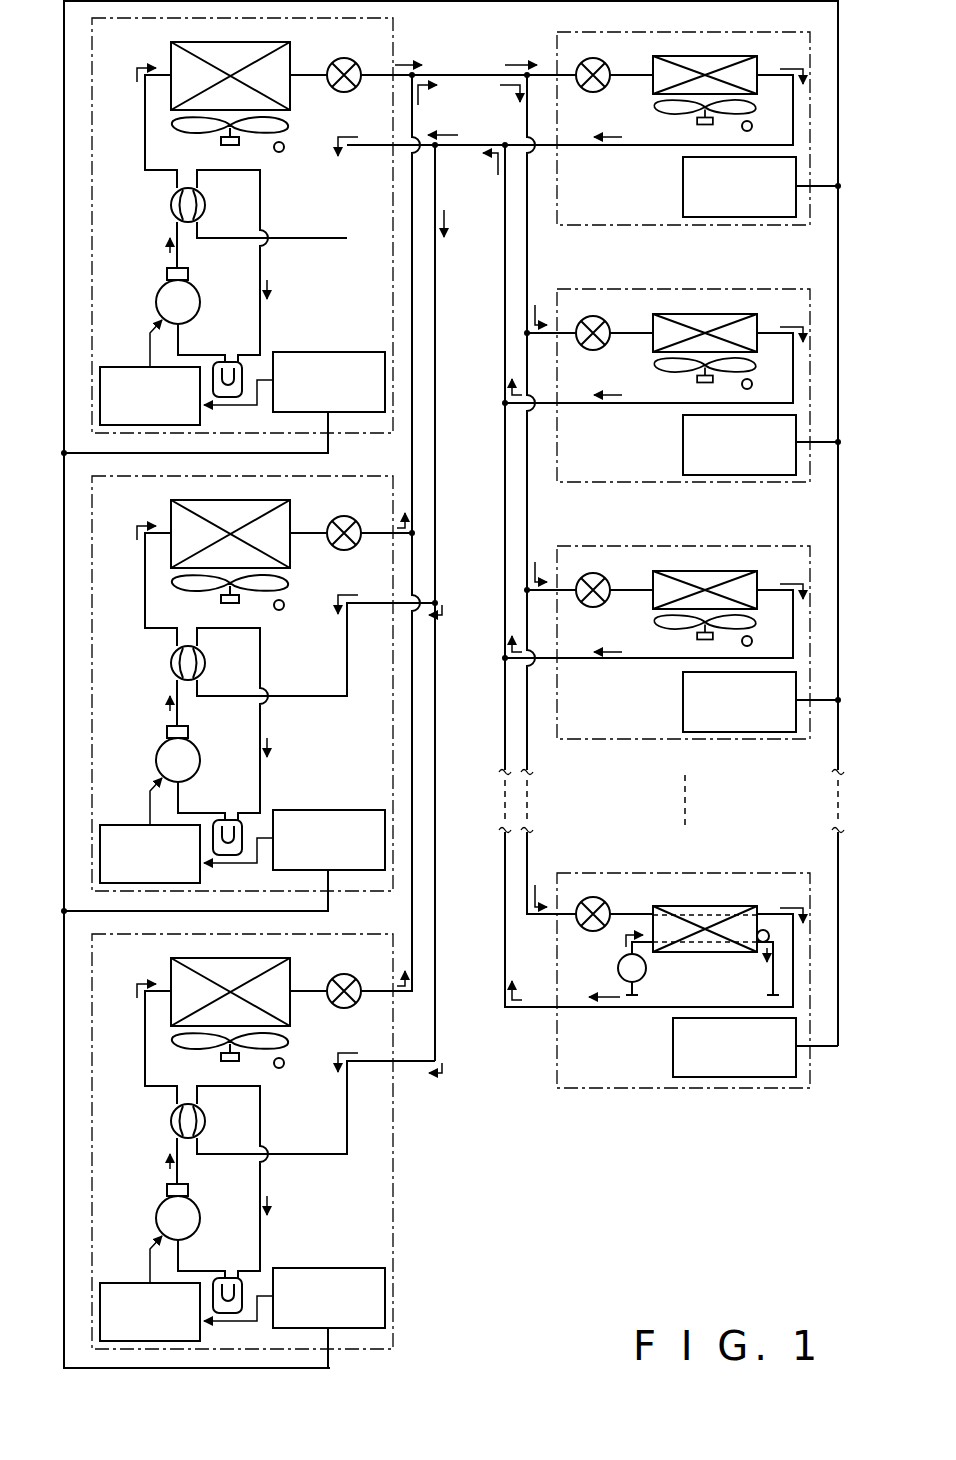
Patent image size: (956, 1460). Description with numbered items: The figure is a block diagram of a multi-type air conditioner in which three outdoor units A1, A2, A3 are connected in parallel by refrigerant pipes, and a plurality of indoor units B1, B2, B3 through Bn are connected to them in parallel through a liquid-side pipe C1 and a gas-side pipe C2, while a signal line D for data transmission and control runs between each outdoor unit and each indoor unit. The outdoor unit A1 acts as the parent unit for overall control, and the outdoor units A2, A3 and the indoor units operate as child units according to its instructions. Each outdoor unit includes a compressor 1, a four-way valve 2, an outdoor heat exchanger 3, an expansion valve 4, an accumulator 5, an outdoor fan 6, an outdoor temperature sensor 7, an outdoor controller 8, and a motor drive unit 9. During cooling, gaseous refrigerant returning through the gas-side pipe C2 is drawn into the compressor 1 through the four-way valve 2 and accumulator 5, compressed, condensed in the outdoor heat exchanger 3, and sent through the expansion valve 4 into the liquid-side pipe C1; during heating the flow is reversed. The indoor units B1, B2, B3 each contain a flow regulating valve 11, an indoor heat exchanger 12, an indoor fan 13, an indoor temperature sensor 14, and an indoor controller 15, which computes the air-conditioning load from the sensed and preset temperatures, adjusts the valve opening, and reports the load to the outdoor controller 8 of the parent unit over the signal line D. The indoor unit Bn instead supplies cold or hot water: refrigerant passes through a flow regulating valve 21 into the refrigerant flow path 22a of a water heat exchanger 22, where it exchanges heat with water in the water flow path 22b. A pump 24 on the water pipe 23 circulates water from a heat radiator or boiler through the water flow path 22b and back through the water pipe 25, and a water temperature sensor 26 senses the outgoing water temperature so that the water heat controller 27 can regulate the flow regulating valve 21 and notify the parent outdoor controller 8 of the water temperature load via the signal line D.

The compressor 1 is at (158, 292).
The four-way valve 2 is at (171, 206).
The outdoor heat exchanger 3 is at (171, 50).
The expansion valve 4 is at (353, 61).
The accumulator 5 is at (236, 398).
The outdoor fan 6 is at (291, 122).
The outdoor temperature sensor 7 is at (283, 151).
The outdoor controller 8 is at (329, 352).
The motor drive unit 9 is at (120, 367).
The flow regulating valve 11 is at (600, 61).
The indoor heat exchanger 12 is at (745, 56).
The indoor fan 13 is at (653, 107).
The indoor temperature sensor 14 is at (752, 129).
The indoor controller 15 is at (683, 187).
The flow regulating valve 21 is at (600, 900).
The water heat exchanger 22 is at (698, 905).
The refrigerant flow path 22a is at (683, 904).
The water flow path 22b is at (703, 955).
The water pipe 23 is at (643, 945).
The pump 24 is at (618, 968).
The water pipe 25 is at (772, 985).
The water temperature sensor 26 is at (766, 930).
The water heat controller 27 is at (673, 1047).
The first outdoor unit A1 is at (398, 27).
The second outdoor unit A2 is at (327, 476).
The third outdoor unit A3 is at (327, 934).
The indoor unit B1 is at (705, 31).
The indoor unit B2 is at (707, 289).
The indoor unit B3 is at (707, 546).
The indoor unit Bn is at (715, 873).
The liquid-side pipe C1 is at (481, 73).
The gas-side pipe C2 is at (472, 143).
The signal line D is at (64, 592).